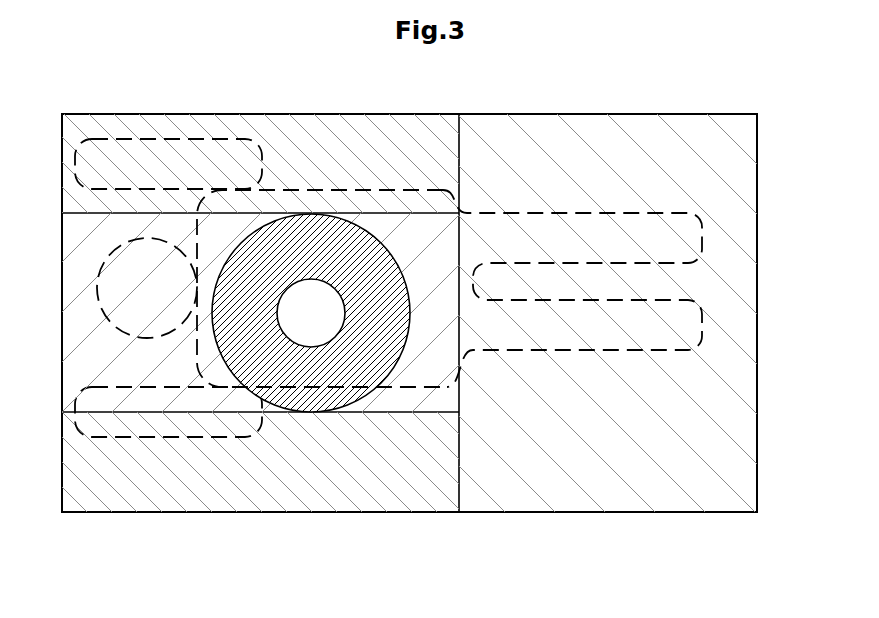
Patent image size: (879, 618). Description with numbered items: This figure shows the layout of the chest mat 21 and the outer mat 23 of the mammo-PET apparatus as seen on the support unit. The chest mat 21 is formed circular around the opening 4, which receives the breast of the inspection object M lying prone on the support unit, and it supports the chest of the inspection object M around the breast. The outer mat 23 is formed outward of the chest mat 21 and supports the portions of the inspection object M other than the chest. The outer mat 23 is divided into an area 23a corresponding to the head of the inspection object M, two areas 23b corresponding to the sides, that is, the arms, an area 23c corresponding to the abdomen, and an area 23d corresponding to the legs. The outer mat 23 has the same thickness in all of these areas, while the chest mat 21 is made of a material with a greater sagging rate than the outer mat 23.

The opening 4 is at (303, 324).
The chest mat 21 is at (312, 216).
The outer mat 23 is at (223, 573).
The area corresponding to the head 23a is at (150, 355).
The areas corresponding to the sides 23b is at (157, 119).
The area corresponding to the abdomen 23c is at (412, 398).
The area corresponding to the legs 23d is at (485, 500).
The inspection object M is at (577, 352).